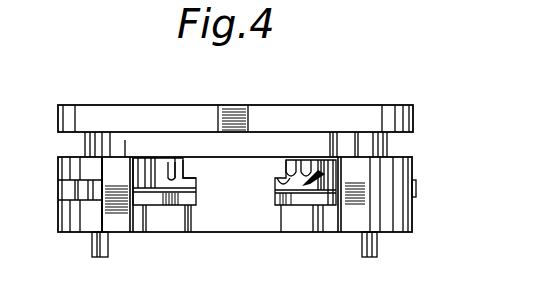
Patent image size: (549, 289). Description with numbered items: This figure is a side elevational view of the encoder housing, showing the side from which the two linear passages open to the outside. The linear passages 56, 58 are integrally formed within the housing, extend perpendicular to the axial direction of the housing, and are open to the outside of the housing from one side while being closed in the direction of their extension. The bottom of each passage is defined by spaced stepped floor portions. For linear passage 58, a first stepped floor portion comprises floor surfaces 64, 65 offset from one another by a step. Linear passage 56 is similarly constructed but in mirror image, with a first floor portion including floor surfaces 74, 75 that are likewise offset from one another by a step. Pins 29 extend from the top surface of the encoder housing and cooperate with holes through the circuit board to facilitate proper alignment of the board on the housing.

The floor surface 75 is at (137, 172).
The linear passage 56 is at (162, 168).
The floor surface 74 is at (186, 183).
The floor surface 64 is at (290, 162).
The floor surface 65 is at (310, 166).
The linear passage 58 is at (340, 158).
The pins 29 is at (93, 240).